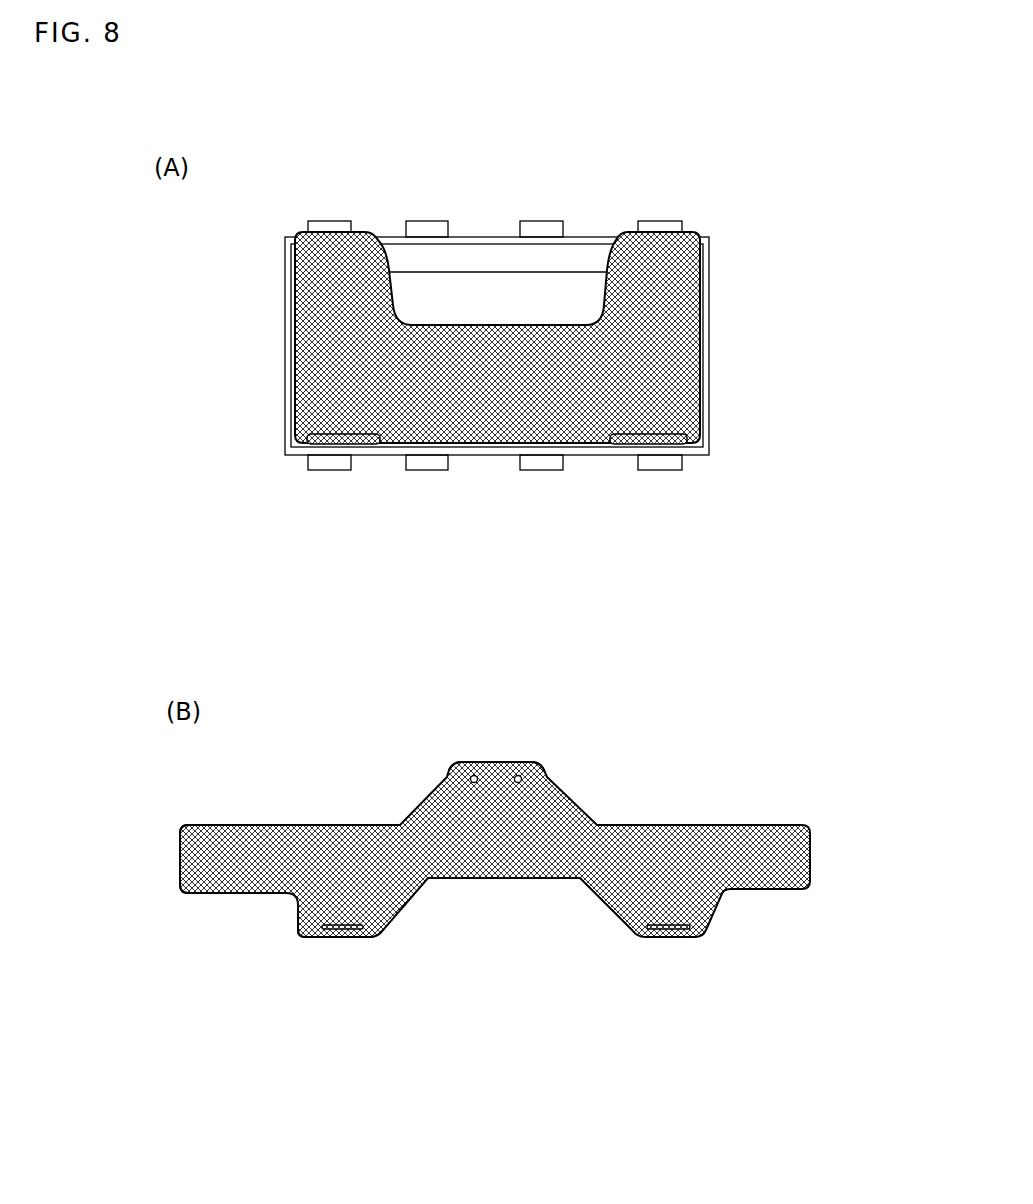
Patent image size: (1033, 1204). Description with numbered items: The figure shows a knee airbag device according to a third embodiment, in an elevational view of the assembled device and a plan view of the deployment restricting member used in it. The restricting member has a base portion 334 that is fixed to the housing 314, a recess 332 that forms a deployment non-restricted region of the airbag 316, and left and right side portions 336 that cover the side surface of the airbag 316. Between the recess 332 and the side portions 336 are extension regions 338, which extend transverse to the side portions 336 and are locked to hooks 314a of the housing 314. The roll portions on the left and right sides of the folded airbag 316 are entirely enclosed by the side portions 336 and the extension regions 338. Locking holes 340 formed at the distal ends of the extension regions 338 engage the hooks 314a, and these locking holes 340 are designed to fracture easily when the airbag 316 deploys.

The housing 314 is at (710, 428).
The hooks 314a is at (662, 222).
The airbag 316 is at (455, 280).
The recess 332 is at (518, 882).
The base portion 334 is at (488, 760).
The side portions 336 is at (240, 835).
The extension regions 338 is at (292, 920).
The locking holes 340 is at (357, 938).